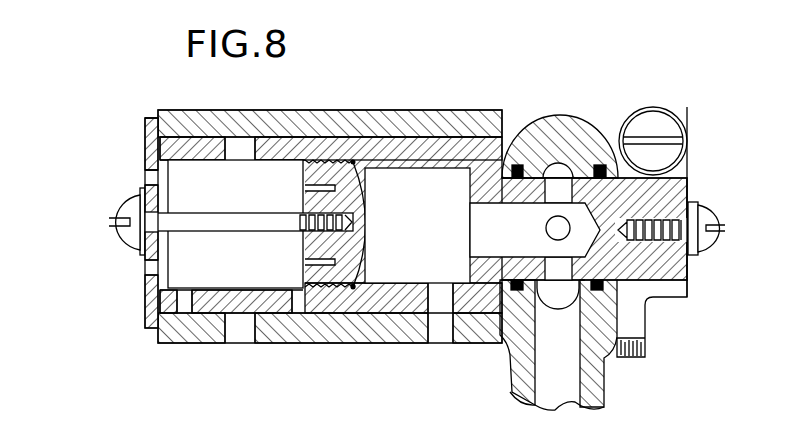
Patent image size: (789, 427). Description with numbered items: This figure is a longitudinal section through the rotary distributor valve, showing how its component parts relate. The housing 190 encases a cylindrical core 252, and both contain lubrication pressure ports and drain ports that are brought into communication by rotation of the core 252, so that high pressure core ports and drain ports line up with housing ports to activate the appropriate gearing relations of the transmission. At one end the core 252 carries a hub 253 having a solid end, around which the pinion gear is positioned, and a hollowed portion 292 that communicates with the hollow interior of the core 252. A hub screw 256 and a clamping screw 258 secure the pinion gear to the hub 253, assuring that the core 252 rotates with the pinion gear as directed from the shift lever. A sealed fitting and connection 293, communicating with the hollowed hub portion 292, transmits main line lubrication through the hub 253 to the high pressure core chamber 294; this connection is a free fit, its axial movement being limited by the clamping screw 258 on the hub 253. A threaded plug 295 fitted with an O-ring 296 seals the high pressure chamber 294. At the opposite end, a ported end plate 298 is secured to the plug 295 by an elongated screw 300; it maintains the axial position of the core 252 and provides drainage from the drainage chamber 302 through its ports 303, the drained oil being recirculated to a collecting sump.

The housing 190 is at (349, 128).
The core 252 is at (447, 152).
The hub 253 is at (667, 198).
The hub screw 256 is at (718, 220).
The clamping screw 258 is at (650, 125).
The hollowed portion 292 is at (535, 230).
The sealed fitting and connection 293 is at (567, 335).
The high pressure core chamber 294 is at (417, 225).
The threaded plug 295 is at (346, 262).
The O-ring 296 is at (354, 288).
The ported end plate 298 is at (150, 289).
The elongated screw 300 is at (132, 242).
The drainage chamber 302 is at (235, 224).
The ports 303 is at (152, 176).